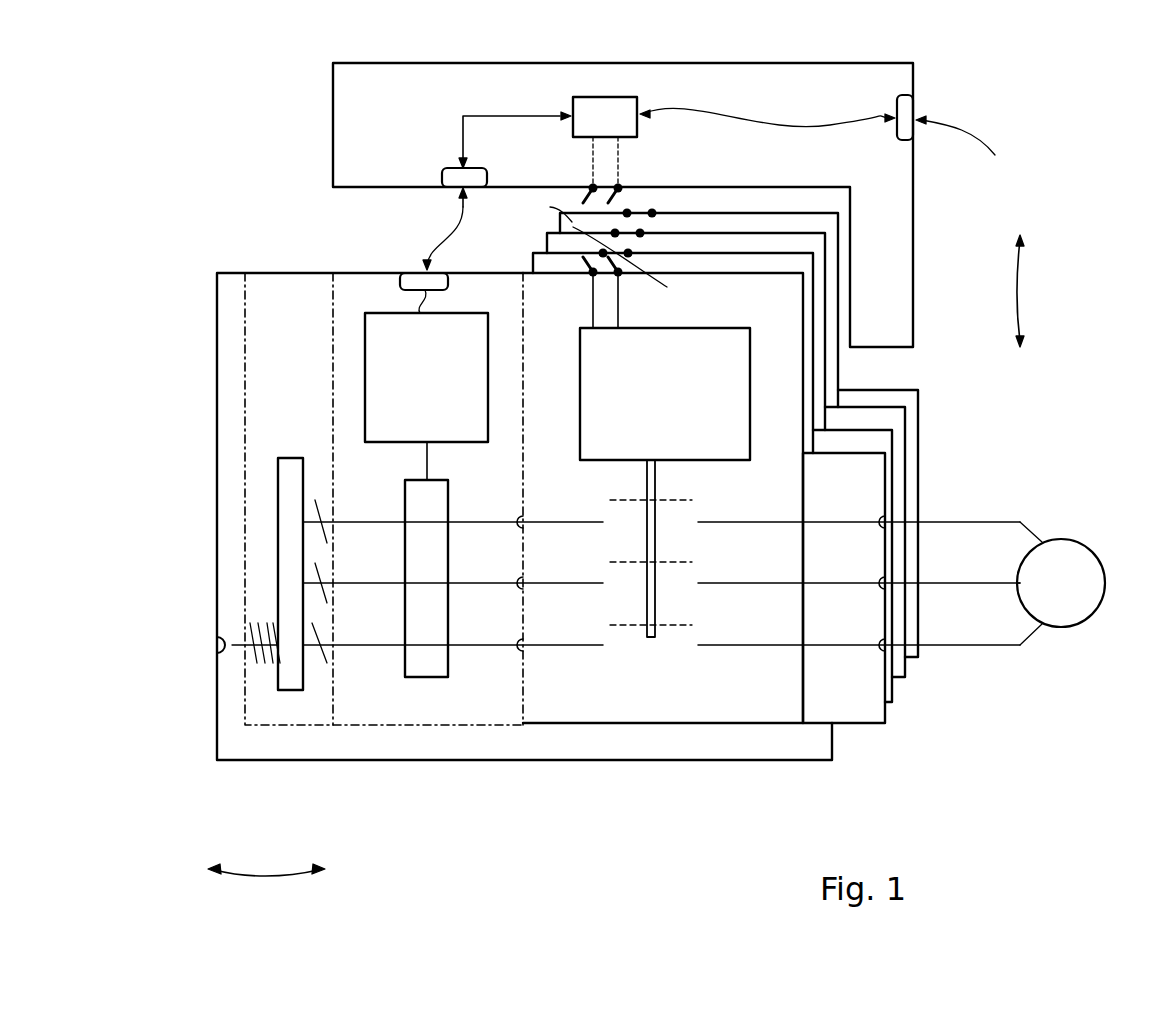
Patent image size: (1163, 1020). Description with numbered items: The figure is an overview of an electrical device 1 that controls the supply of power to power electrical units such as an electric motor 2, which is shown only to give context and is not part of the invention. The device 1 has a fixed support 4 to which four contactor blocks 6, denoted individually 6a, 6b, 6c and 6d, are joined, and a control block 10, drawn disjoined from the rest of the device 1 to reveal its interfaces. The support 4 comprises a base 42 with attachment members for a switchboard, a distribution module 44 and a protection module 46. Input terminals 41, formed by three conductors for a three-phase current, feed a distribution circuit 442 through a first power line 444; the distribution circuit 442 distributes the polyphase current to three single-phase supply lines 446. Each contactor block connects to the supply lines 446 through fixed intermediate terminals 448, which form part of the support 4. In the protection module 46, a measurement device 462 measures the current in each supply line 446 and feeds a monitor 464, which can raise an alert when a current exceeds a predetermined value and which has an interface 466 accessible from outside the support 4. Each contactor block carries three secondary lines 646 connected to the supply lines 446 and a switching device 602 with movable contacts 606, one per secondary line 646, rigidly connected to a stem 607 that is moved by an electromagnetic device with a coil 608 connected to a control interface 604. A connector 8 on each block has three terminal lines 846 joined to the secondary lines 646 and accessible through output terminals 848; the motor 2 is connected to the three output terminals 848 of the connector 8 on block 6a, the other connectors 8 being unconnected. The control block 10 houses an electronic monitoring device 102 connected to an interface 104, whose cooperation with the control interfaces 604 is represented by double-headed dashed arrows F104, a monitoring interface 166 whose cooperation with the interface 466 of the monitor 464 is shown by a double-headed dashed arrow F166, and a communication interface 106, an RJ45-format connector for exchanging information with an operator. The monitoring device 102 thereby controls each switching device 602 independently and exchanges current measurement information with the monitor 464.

The electrical device 1 is at (990, 95).
The control block 10 is at (873, 80).
The electronic monitoring device 102 is at (603, 118).
The interface 104 is at (615, 184).
The communication interface 106 is at (964, 136).
The monitoring interface 166 is at (444, 178).
The double-headed dashed arrows F104 is at (584, 244).
The double-headed dashed arrow F166 is at (454, 238).
The interface 466 is at (425, 275).
The monitor 464 is at (426, 396).
The control interface 604 is at (598, 285).
The contactor blocks 6 is at (1030, 291).
The contactor block 6a is at (787, 305).
The contactor block 6b is at (805, 270).
The contactor block 6c is at (815, 248).
The contactor block 6d is at (843, 215).
The switching device 602 is at (722, 405).
The coil 608 is at (665, 366).
The connector 8 is at (870, 470).
The electric motor 2 is at (1073, 557).
The distribution circuit 442 is at (290, 548).
The first power line 444 is at (233, 633).
The input terminals 41 is at (203, 645).
The intermediate terminals 448 is at (528, 524).
The output terminal 848 is at (890, 525).
The base 42 is at (223, 733).
The distribution module 44 is at (282, 707).
The protection module 46 is at (353, 700).
The fixed support 4 is at (266, 886).
The measurement device 462 is at (430, 662).
The supply lines 446 is at (473, 522).
The stem 607 is at (643, 590).
The movable contacts 606 is at (672, 500).
The secondary lines 646 is at (737, 523).
The terminal lines 846 is at (840, 522).